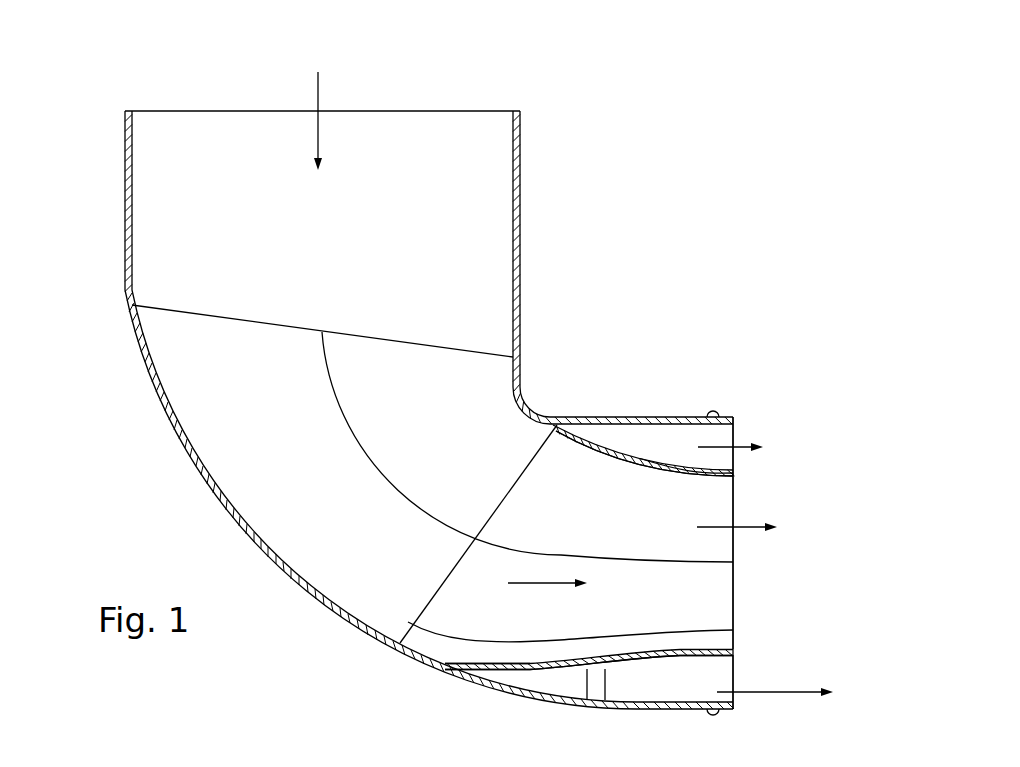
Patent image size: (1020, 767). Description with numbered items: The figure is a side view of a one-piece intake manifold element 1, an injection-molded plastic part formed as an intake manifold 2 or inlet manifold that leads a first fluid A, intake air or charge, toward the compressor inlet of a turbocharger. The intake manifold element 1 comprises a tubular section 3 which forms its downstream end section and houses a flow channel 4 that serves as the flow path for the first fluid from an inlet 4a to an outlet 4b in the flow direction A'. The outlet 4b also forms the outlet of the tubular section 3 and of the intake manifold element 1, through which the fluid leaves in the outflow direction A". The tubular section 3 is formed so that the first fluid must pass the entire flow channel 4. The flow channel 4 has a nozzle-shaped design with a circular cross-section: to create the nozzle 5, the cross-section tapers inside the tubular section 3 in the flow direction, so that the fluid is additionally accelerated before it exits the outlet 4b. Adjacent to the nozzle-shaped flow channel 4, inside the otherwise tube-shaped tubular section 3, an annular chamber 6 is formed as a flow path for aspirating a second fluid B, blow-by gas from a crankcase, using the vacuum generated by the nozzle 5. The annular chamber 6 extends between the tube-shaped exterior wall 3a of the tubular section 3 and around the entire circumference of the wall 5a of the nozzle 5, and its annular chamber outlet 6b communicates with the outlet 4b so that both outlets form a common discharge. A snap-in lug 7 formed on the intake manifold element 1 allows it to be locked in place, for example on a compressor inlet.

The intake manifold element 1 is at (628, 224).
The intake manifold 2 is at (290, 246).
The tubular section 3 is at (682, 373).
The exterior wall 3a is at (625, 418).
The flow channel 4 is at (598, 511).
The inlet of the flow channel 4a is at (396, 615).
The outlet of the flow channel 4b is at (746, 603).
The nozzle 5 is at (633, 657).
The wall of the nozzle 5a is at (662, 465).
The annular chamber 6 is at (645, 438).
The annular chamber outlet 6b is at (748, 426).
The snap-in lug 7 is at (715, 412).